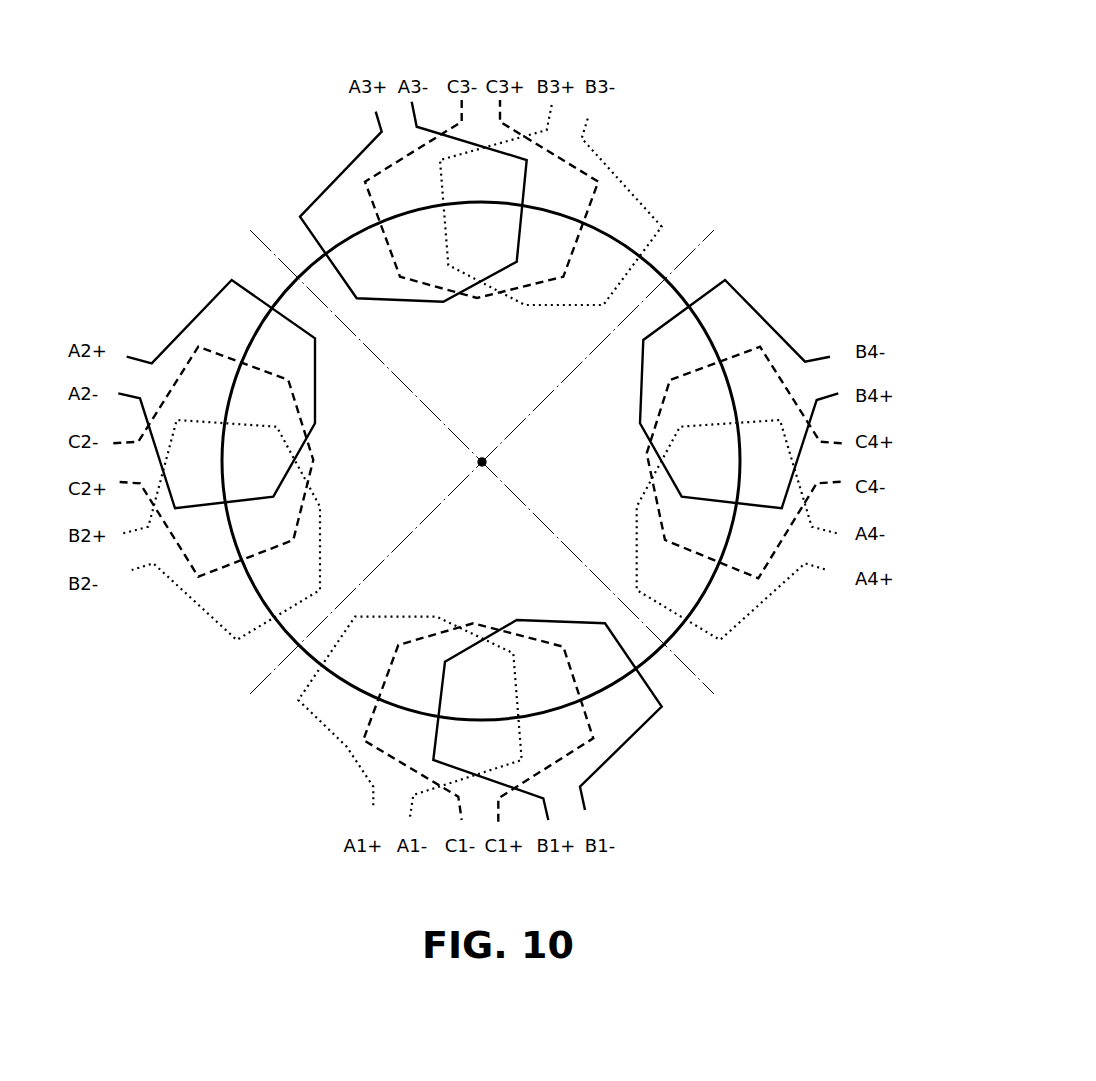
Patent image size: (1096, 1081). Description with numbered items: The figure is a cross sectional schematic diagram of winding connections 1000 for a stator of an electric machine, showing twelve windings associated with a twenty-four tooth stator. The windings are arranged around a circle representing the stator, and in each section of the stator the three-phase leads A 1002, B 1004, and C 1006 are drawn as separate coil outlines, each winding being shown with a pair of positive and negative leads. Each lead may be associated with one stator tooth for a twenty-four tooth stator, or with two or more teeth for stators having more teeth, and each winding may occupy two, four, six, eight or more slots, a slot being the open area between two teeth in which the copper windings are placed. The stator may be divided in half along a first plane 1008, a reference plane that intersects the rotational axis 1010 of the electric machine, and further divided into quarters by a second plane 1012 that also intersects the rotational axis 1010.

The winding connections 1000 is at (694, 54).
The phase lead A 1002 is at (342, 748).
The phase lead B 1004 is at (620, 748).
The phase lead C 1006 is at (450, 798).
The first plane 1008 is at (708, 680).
The rotational axis 1010 is at (482, 457).
The second plane 1012 is at (713, 233).